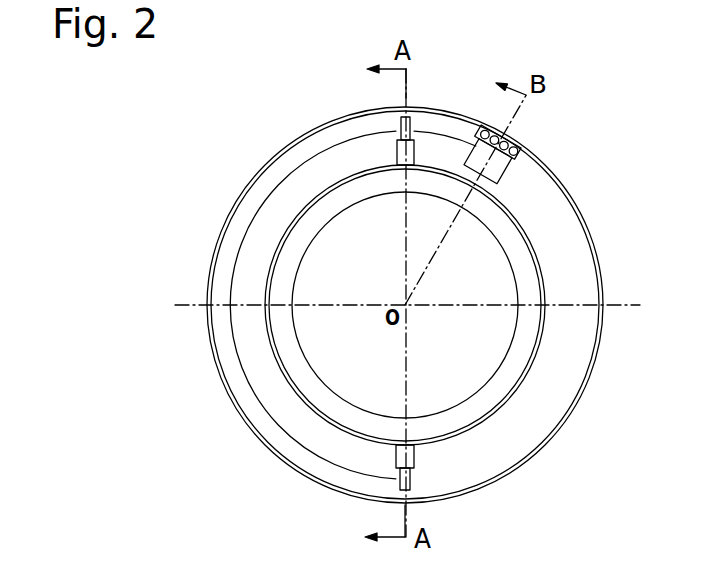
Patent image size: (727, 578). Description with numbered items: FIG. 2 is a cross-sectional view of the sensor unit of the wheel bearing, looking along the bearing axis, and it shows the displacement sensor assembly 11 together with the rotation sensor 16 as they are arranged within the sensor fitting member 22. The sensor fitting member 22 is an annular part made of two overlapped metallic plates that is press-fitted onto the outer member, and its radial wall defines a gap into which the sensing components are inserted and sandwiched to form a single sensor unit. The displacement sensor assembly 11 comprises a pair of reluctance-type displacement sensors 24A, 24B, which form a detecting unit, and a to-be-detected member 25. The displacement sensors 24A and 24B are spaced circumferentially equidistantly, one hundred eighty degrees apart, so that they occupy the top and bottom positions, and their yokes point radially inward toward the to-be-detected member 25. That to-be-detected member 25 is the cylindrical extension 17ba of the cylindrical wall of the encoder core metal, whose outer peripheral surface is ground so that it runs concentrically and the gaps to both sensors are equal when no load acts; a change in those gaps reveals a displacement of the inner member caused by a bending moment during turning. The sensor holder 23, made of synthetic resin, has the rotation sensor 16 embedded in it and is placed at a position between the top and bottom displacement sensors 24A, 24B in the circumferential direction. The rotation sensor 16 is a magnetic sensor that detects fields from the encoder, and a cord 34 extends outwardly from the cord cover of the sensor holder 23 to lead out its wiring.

The sensor fitting member 22 is at (301, 125).
The displacement sensor assembly 11 is at (80, 133).
The displacement sensor 24A is at (397, 152).
The displacement sensor 24B is at (397, 447).
The to-be-detected member 25 is at (313, 303).
The cylindrical extension 17ba is at (315, 183).
The sensor holder 23 is at (513, 158).
The rotation sensor 16 is at (497, 184).
The cord 34 is at (503, 131).